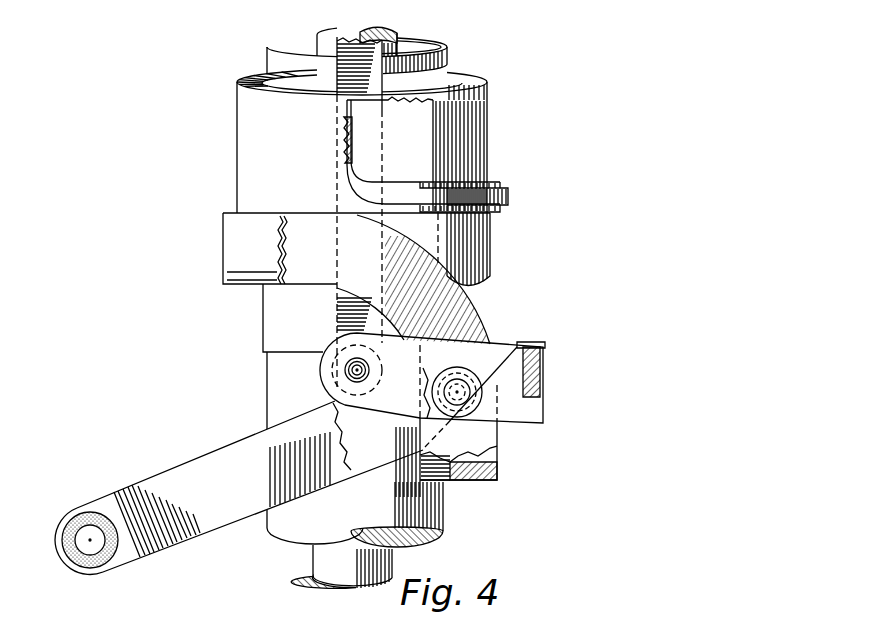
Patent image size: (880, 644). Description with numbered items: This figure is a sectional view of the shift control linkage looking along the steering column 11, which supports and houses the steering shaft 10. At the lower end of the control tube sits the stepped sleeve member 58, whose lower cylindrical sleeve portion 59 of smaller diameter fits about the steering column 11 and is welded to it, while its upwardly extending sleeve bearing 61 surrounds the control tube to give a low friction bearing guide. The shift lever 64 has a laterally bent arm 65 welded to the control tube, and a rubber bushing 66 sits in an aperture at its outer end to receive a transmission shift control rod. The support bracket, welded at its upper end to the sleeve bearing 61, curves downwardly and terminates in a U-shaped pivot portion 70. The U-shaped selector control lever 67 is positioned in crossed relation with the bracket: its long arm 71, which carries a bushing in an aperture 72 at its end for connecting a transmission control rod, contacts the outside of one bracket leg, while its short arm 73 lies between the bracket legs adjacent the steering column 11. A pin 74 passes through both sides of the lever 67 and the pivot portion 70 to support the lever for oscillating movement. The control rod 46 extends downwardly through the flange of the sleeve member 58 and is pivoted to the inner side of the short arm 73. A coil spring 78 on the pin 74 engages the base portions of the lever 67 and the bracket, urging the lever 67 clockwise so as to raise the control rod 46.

The steering shaft 10 is at (330, 42).
The steering column 11 is at (447, 62).
The control rod 46 is at (337, 68).
The stepped sleeve member 58 is at (232, 285).
The lower cylindrical sleeve portion 59 is at (262, 329).
The sleeve bearing 61 is at (223, 249).
The shift lever 64 is at (397, 192).
The laterally bent arm 65 is at (362, 133).
The rubber bushing 66 is at (503, 168).
The selector control lever 67 is at (530, 412).
The U-shaped pivot portion 70 is at (490, 450).
The long arm 71 is at (190, 468).
The aperture 72 is at (67, 544).
The short arm 73 is at (327, 375).
The pin 74 is at (457, 378).
The coil spring 78 is at (518, 343).